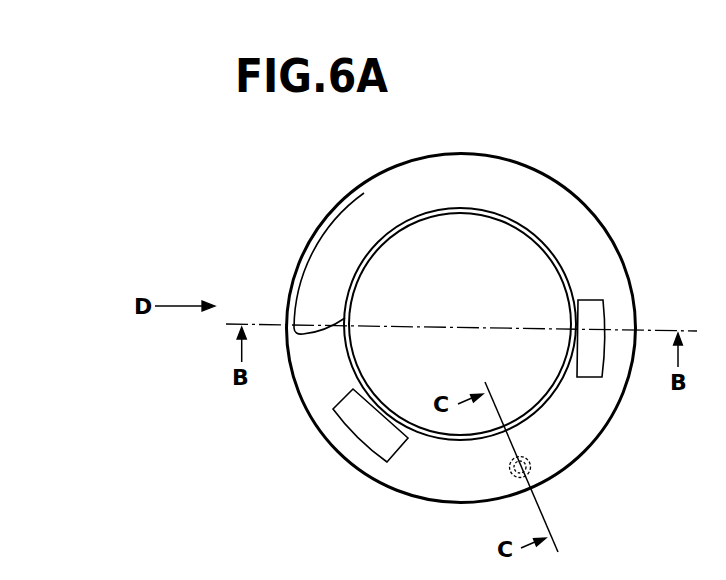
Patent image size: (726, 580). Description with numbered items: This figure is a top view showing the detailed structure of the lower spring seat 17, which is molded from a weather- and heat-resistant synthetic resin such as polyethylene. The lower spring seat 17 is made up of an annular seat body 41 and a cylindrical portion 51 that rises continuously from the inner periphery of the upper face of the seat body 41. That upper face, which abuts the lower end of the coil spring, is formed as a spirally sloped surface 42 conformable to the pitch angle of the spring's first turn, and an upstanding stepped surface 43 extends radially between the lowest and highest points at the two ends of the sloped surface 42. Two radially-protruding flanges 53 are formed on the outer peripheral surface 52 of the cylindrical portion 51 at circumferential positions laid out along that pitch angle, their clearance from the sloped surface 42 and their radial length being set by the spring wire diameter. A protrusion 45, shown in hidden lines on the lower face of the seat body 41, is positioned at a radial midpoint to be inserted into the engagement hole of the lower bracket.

The lower spring seat 17 is at (565, 140).
The annular seat body 41 is at (625, 236).
The spirally sloped surface 42 is at (588, 408).
The upstanding stepped surface 43 is at (307, 333).
The protrusion 45 is at (542, 466).
The cylindrical portion 51 is at (471, 198).
The outer peripheral surface 52 is at (357, 270).
The radially-protruding flange 53 is at (597, 317).